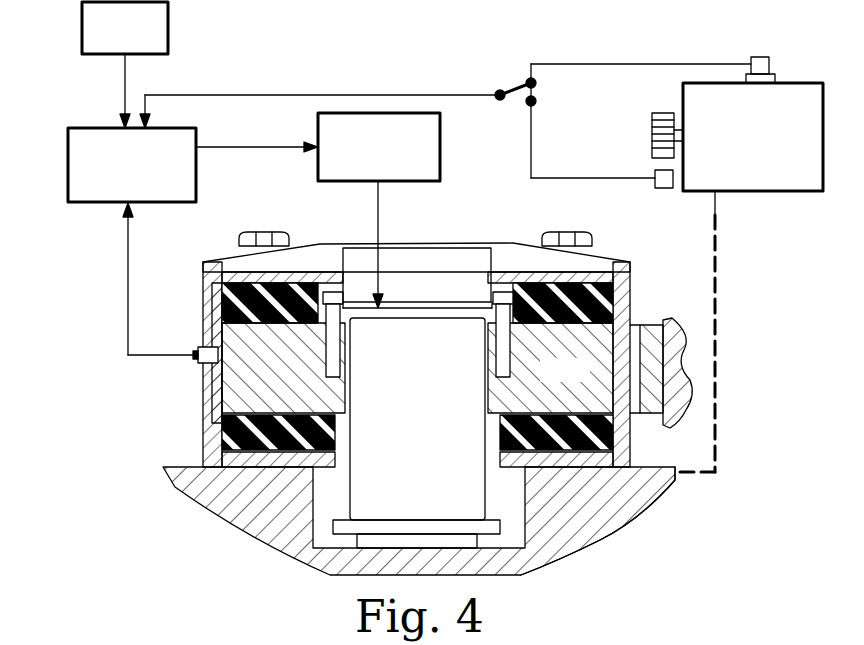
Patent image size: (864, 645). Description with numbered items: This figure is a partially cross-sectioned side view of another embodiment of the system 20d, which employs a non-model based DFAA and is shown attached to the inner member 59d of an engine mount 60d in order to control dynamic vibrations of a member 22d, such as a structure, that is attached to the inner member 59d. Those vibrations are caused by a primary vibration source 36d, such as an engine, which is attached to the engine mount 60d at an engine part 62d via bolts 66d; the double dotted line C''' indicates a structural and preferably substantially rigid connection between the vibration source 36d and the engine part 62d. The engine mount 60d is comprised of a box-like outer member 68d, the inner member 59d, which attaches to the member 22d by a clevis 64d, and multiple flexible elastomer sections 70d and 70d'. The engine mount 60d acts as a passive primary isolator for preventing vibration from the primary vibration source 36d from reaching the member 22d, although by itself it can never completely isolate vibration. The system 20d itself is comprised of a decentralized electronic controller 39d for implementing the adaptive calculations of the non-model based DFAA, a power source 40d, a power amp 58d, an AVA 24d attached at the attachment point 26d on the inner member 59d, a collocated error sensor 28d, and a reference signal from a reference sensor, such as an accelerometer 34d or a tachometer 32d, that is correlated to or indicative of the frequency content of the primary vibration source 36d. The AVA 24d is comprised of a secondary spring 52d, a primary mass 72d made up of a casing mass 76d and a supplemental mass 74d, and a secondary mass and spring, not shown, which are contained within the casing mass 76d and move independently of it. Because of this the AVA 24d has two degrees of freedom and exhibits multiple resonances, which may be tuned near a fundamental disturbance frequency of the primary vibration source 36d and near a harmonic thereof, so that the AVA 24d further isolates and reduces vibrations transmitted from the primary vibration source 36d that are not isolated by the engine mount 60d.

The system 20d is at (700, 428).
The member 22d is at (692, 355).
The AVA 24d is at (500, 532).
The attachment point 26d is at (333, 292).
The collocated error sensor 28d is at (198, 360).
The tachometer 32d is at (650, 166).
The accelerometer 34d is at (766, 56).
The primary vibration source 36d is at (745, 191).
The decentralized electronic controller 39d is at (105, 128).
The power source 40d is at (170, 25).
The secondary spring 52d is at (425, 318).
The power amp 58d is at (441, 155).
The inner member 59d is at (417, 368).
The engine mount 60d is at (190, 453).
The engine part 62d is at (622, 514).
The clevis 64d is at (652, 325).
The bolts 66d is at (262, 232).
The box-like outer member 68d is at (212, 264).
The flexible elastomer section 70d is at (375, 364).
The flexible elastomer section 70d' is at (141, 353).
The primary mass 72d is at (416, 501).
The supplemental mass 74d is at (417, 275).
The casing mass 76d is at (345, 530).
The double dotted line C''' is at (754, 252).